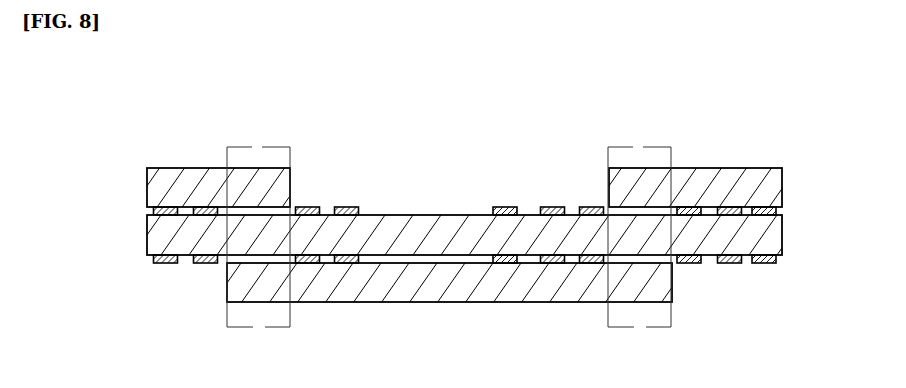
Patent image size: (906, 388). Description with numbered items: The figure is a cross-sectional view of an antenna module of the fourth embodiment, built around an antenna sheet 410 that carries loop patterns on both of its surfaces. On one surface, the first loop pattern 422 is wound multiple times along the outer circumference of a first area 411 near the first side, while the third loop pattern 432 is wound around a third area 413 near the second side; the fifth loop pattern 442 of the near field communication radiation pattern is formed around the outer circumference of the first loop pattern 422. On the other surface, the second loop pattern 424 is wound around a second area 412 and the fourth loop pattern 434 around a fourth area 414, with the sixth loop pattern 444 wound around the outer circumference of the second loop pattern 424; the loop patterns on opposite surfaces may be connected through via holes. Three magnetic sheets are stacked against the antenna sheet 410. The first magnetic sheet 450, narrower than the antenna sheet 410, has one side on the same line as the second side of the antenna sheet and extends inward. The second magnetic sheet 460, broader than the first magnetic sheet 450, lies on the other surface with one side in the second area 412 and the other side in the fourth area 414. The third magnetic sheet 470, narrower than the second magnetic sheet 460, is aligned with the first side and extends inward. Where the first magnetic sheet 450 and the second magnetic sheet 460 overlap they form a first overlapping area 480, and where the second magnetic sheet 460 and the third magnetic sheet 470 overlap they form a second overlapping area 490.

The antenna sheet 410 is at (147, 238).
The first area 411 is at (608, 175).
The second area 412 is at (643, 257).
The third area 413 is at (287, 176).
The fourth area 414 is at (257, 257).
The first loop pattern 422 is at (591, 207).
The second loop pattern 424 is at (591, 263).
The third loop pattern 432 is at (205, 207).
The fourth loop pattern 434 is at (205, 263).
The fifth loop pattern 442 is at (505, 207).
The sixth loop pattern 444 is at (505, 263).
The first magnetic sheet 450 is at (147, 190).
The second magnetic sheet 460 is at (487, 302).
The third magnetic sheet 470 is at (742, 168).
The first overlapping area 480 is at (258, 145).
The second overlapping area 490 is at (640, 145).